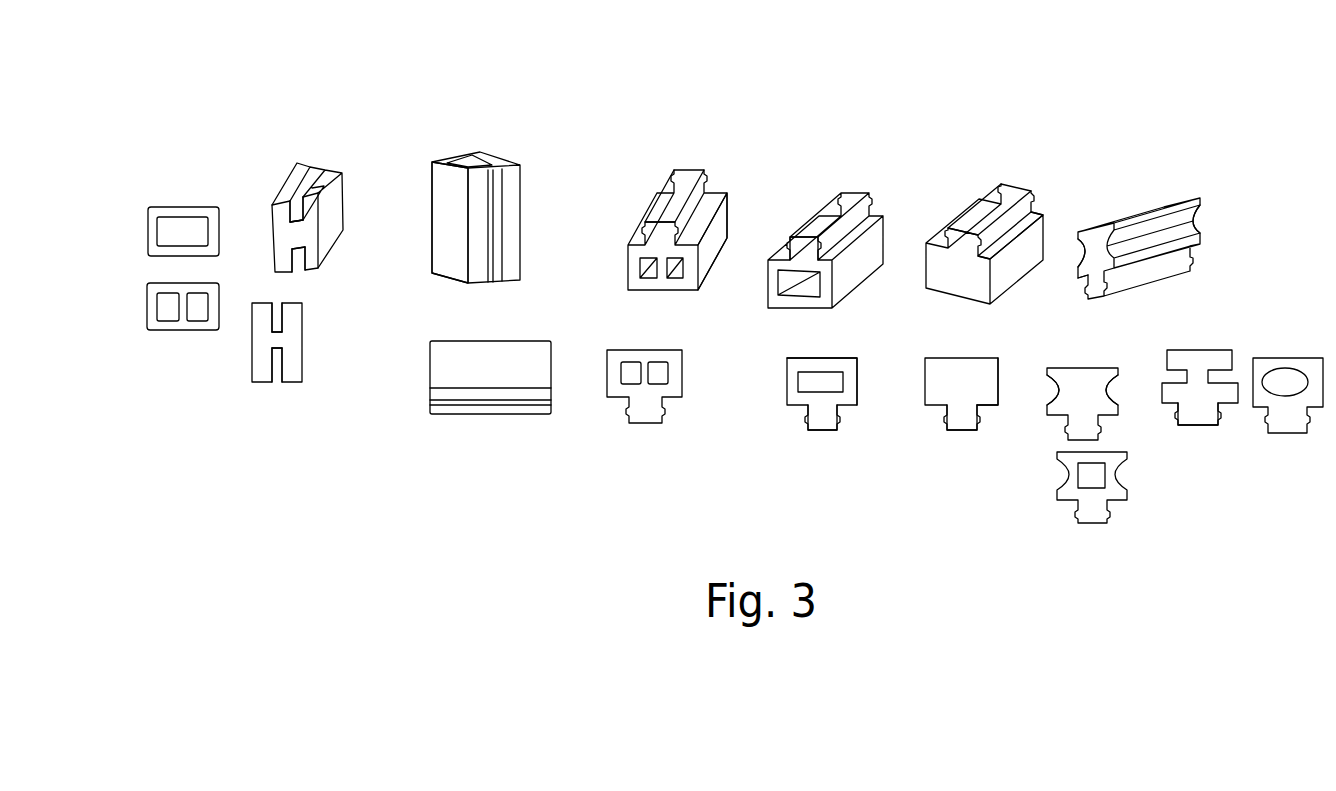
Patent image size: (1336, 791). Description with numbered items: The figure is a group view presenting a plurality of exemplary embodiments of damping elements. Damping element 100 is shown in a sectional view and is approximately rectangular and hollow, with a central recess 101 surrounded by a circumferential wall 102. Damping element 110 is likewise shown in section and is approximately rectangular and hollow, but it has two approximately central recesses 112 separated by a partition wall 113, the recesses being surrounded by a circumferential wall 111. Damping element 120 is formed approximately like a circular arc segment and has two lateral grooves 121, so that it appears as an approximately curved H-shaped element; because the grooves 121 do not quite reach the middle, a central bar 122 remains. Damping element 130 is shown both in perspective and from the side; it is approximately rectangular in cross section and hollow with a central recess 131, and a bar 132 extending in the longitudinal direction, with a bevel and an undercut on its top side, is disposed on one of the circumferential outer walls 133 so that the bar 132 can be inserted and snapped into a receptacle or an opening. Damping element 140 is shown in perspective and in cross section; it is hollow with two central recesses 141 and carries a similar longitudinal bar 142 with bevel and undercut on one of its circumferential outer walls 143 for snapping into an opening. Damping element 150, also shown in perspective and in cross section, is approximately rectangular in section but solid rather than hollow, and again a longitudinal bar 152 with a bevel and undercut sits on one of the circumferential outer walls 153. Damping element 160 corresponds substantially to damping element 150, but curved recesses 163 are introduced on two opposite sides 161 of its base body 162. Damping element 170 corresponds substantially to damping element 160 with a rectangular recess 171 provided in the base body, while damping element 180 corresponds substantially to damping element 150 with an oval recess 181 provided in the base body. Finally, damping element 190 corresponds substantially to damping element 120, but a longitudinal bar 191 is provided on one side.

The damping element 100 is at (152, 177).
The central recess 101 is at (168, 230).
The circumferential wall 102 is at (198, 214).
The damping element 110 is at (153, 358).
The circumferential wall 111 is at (148, 303).
The recesses 112 is at (202, 312).
The partition wall 113 is at (185, 310).
The damping element 120 is at (312, 260).
The lateral grooves 121 is at (313, 180).
The central bar 122 is at (293, 232).
The damping element 130 is at (647, 275).
The central recess 131 is at (487, 157).
The bar 132 is at (507, 188).
The circumferential outer wall 133 is at (445, 188).
The damping element 140 is at (690, 289).
The central recesses 141 is at (653, 367).
The bar 142 is at (685, 185).
The circumferential outer wall 143 is at (717, 232).
The damping element 150 is at (1005, 306).
The bar 152 is at (1007, 198).
The circumferential outer wall 153 is at (1028, 220).
The damping element 160 is at (1136, 294).
The opposite sides 161 is at (1200, 263).
The base body 162 is at (1092, 290).
The curved recesses 163 is at (1108, 392).
The damping element 170 is at (1118, 527).
The rectangular recess 171 is at (1098, 475).
The damping element 180 is at (1291, 380).
The oval recess 181 is at (1288, 387).
The damping element 190 is at (1205, 382).
The longitudinal bar 191 is at (1197, 413).